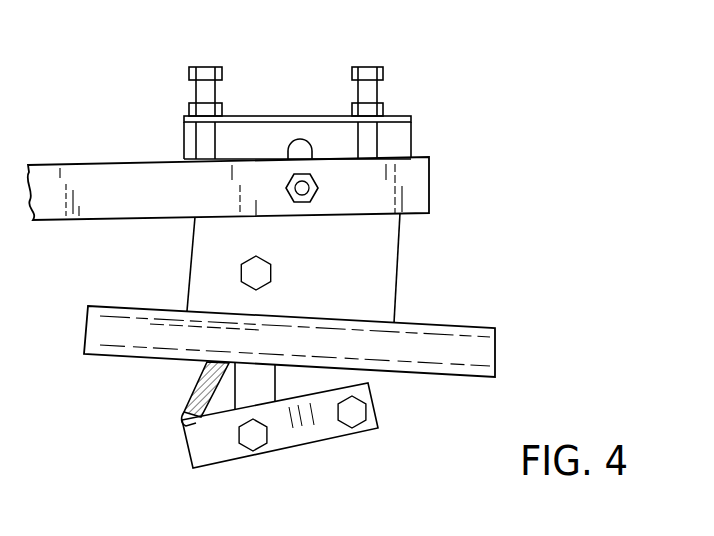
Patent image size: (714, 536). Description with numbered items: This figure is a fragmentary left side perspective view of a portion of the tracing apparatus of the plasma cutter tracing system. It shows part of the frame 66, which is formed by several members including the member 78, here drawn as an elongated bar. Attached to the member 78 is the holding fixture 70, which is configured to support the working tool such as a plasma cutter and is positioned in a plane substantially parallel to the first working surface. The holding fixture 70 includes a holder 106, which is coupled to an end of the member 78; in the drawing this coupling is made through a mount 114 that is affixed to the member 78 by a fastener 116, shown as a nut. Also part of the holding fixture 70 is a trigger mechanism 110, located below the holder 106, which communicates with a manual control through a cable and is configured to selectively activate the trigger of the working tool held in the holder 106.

The frame 66 is at (228, 154).
The member 78 is at (155, 190).
The holding fixture 70 is at (258, 103).
The fastener 116 is at (318, 190).
The mount 114 is at (357, 261).
The holder 106 is at (458, 327).
The trigger mechanism 110 is at (275, 382).